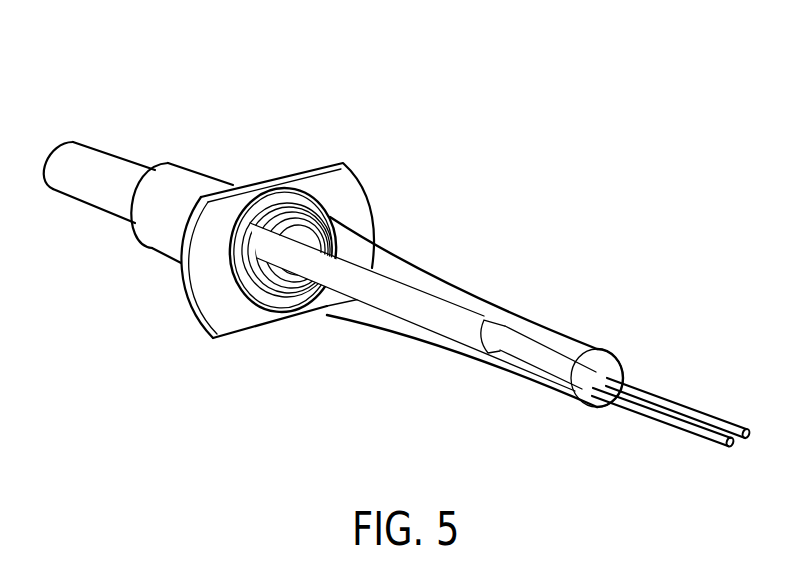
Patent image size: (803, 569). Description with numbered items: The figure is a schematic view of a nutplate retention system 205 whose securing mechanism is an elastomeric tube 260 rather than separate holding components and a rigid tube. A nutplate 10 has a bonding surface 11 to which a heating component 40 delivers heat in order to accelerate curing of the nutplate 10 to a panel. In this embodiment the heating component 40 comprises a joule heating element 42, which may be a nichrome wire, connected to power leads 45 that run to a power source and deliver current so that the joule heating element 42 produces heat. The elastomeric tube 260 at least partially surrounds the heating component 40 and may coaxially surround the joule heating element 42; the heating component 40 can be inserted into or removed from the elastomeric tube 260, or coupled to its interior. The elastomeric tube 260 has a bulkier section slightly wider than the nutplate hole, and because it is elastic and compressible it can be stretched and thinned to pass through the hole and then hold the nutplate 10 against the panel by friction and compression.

The nutplate retention system 205 is at (398, 238).
The nutplate 10 is at (346, 183).
The bonding surface 11 is at (353, 191).
The heating component 40 is at (327, 302).
The joule heating element 42 is at (436, 316).
The elastomeric tube 260 is at (553, 324).
The power leads 45 is at (727, 414).